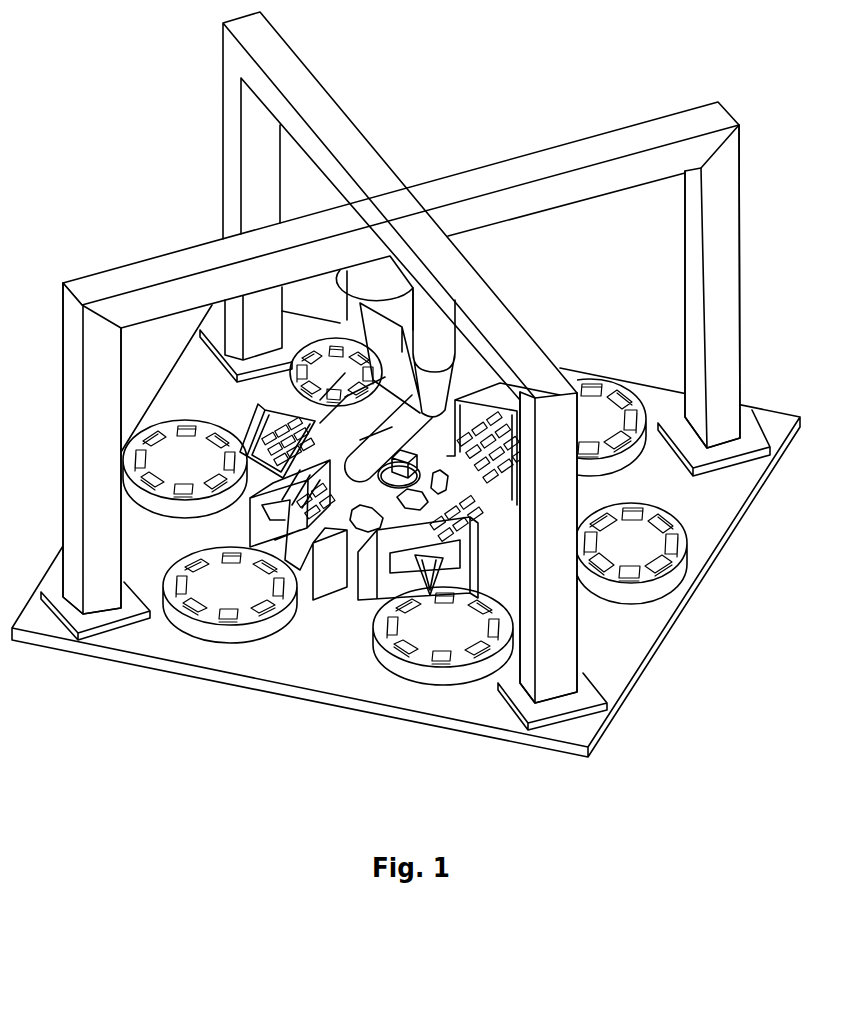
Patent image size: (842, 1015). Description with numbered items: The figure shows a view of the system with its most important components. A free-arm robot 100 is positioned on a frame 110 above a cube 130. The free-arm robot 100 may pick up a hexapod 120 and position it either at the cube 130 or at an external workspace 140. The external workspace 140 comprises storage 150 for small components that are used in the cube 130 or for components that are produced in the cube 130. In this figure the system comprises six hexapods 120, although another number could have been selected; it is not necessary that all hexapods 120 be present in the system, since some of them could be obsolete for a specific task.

The free-arm robot 100 is at (425, 379).
The frame 110 is at (560, 438).
The hexapod 120 is at (297, 585).
The cube 130 is at (358, 548).
The external workspace 140 is at (462, 666).
The storage 150 is at (223, 630).